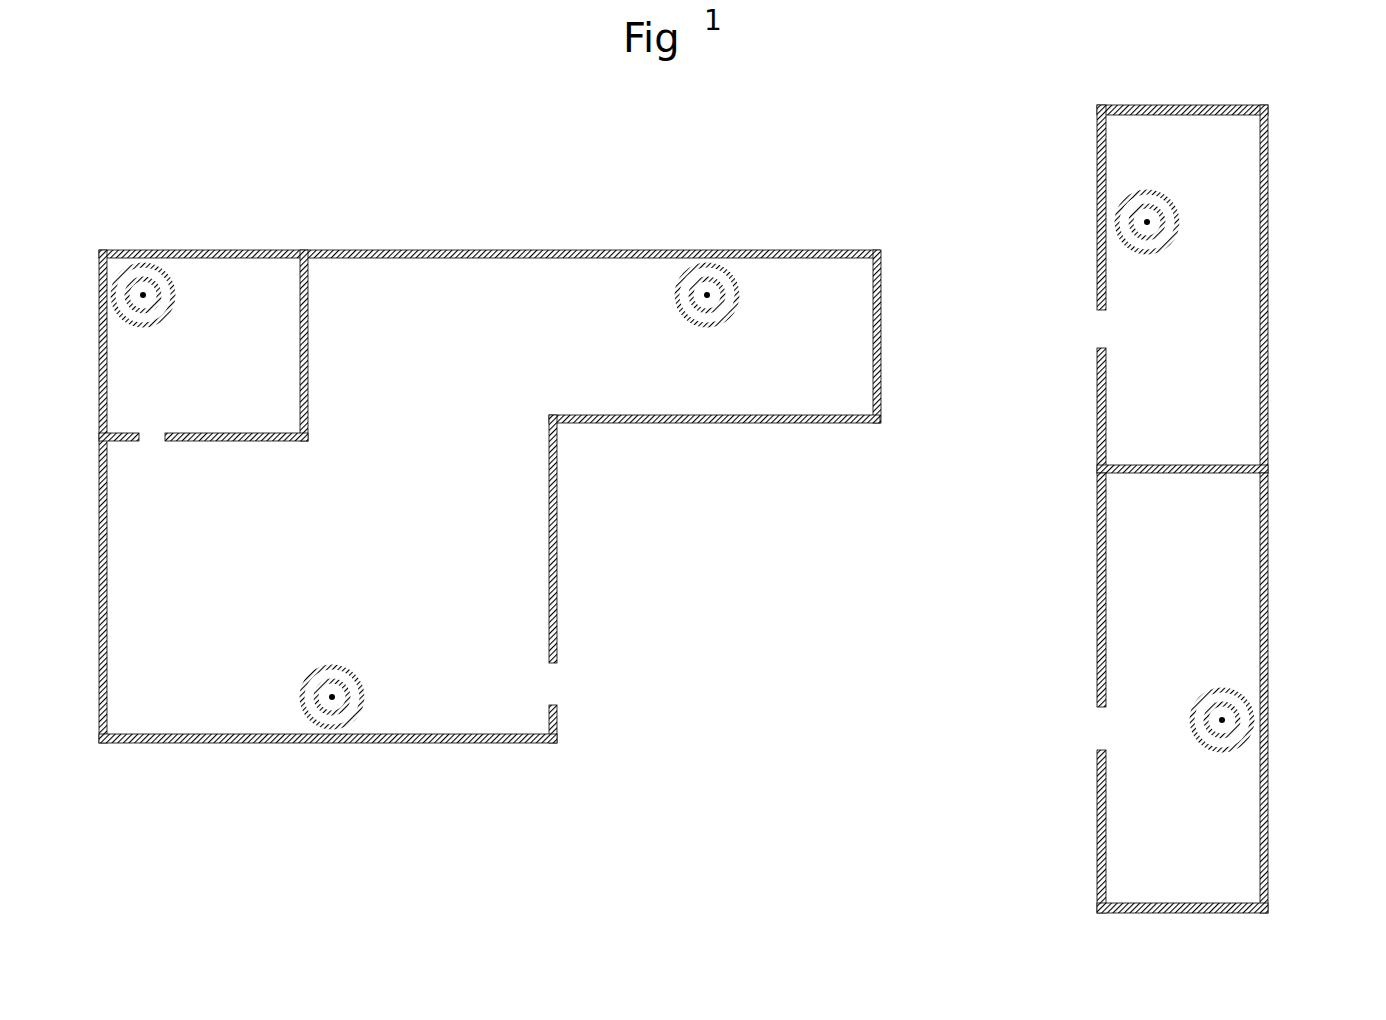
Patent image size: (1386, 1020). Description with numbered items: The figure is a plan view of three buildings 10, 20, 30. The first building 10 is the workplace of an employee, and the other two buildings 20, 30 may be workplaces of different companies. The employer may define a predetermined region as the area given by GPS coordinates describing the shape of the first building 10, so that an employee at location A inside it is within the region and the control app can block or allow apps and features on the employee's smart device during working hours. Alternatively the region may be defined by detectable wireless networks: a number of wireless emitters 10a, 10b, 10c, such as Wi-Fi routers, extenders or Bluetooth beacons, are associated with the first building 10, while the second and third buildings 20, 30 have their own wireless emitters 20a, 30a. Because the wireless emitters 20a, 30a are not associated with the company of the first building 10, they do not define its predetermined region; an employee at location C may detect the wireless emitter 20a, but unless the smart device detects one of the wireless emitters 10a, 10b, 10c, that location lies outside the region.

The first building 10 is at (402, 250).
The wireless emitter 10a is at (190, 295).
The wireless emitter 10b is at (369, 689).
The wireless emitter 10c is at (703, 299).
The second building 20 is at (1268, 140).
The wireless emitter 20a is at (1150, 228).
The third building 30 is at (1272, 578).
The wireless emitter 30a is at (1226, 718).